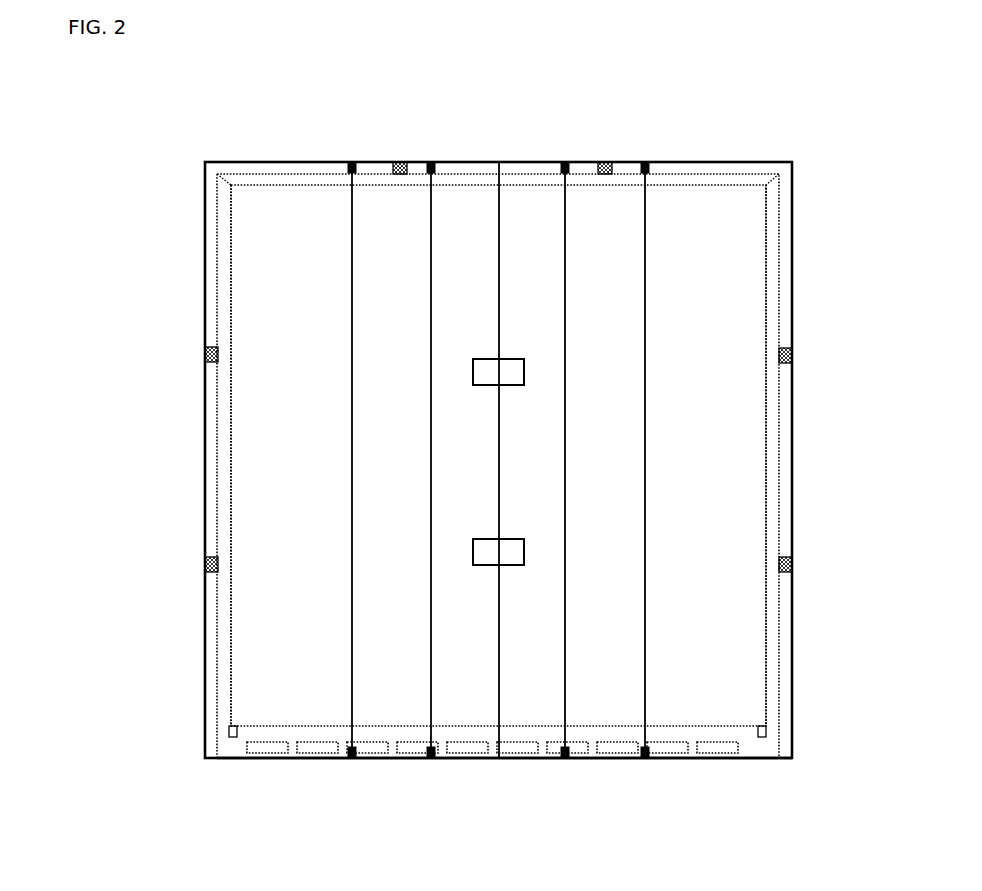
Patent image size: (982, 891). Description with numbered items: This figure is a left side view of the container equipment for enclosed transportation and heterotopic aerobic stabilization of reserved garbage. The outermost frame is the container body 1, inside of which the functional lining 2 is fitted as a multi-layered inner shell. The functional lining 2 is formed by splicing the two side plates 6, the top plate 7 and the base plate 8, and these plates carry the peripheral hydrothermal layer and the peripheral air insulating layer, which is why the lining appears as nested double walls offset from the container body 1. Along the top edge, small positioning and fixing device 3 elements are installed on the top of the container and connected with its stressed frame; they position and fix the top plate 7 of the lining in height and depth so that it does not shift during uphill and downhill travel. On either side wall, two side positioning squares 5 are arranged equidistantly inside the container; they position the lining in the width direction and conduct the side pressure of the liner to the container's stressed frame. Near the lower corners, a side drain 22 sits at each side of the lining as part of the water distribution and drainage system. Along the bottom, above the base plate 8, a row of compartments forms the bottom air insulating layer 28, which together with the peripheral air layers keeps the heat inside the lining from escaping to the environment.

The container body 1 is at (203, 227).
The functional lining 2 is at (268, 191).
The positioning and fixing device 3 is at (396, 163).
The side positioning square 5 is at (205, 352).
The side plate 6 is at (218, 437).
The top plate 7 is at (688, 178).
The base plate 8 is at (770, 745).
The side drain 22 is at (233, 731).
The bottom air insulating layer 28 is at (268, 748).